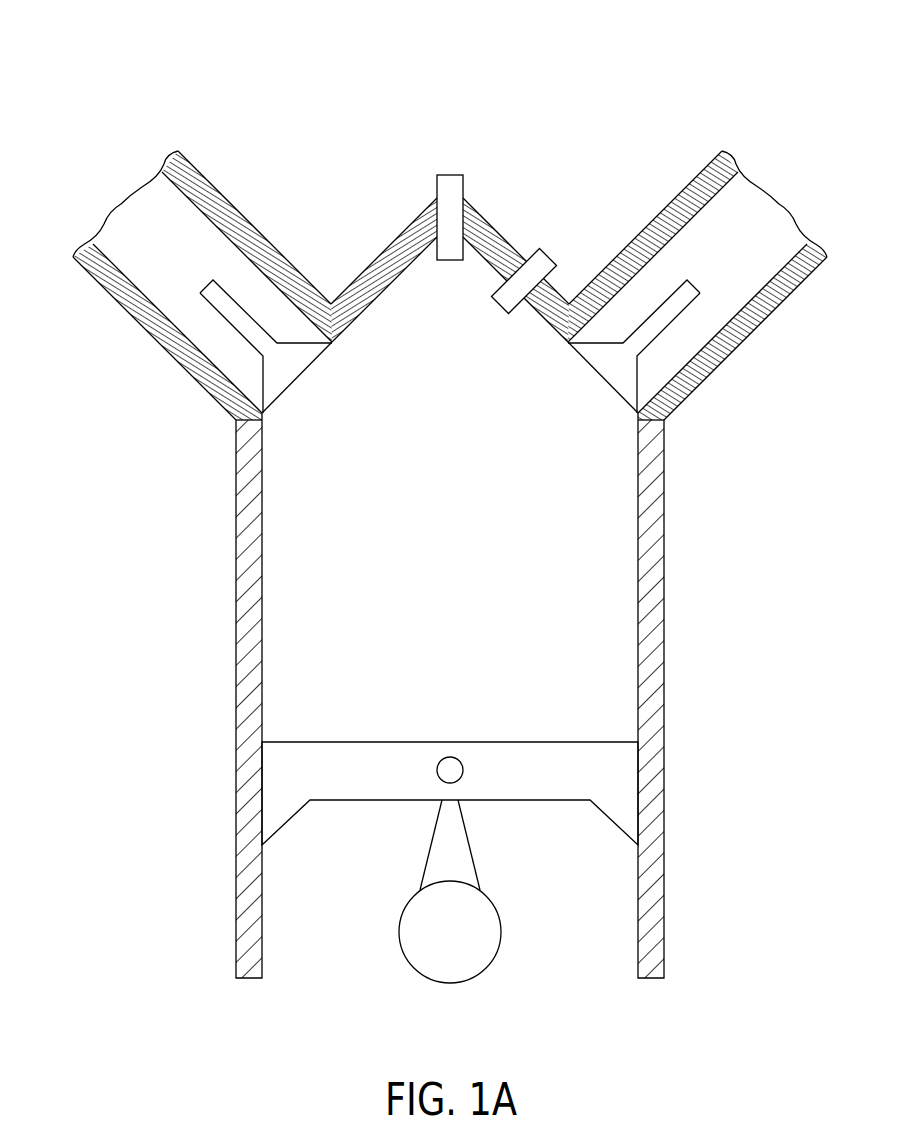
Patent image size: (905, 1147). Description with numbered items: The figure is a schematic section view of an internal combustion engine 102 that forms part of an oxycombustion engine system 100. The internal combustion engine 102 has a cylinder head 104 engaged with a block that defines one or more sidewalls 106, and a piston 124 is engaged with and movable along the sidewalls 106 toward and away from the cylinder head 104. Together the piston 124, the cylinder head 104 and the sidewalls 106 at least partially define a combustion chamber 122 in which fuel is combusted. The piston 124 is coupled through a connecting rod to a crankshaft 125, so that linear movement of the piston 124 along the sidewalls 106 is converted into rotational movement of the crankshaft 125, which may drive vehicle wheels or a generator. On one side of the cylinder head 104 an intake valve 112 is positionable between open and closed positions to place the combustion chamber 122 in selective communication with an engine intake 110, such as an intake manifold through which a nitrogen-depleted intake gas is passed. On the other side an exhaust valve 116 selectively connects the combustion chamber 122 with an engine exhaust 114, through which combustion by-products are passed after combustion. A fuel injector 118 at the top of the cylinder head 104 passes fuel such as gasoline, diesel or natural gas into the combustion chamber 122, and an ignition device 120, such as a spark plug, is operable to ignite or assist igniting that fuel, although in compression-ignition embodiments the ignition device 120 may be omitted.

The oxycombustion engine system 100 is at (448, 512).
The internal combustion engine 102 is at (448, 260).
The cylinder head 104 is at (436, 230).
The sidewalls 106 is at (235, 615).
The engine intake 110 is at (197, 285).
The intake valve 112 is at (295, 377).
The engine exhaust 114 is at (701, 285).
The exhaust valve 116 is at (605, 377).
The fuel injector 118 is at (450, 175).
The ignition device 120 is at (550, 253).
The combustion chamber 122 is at (470, 578).
The piston 124 is at (450, 825).
The crankshaft 125 is at (414, 912).